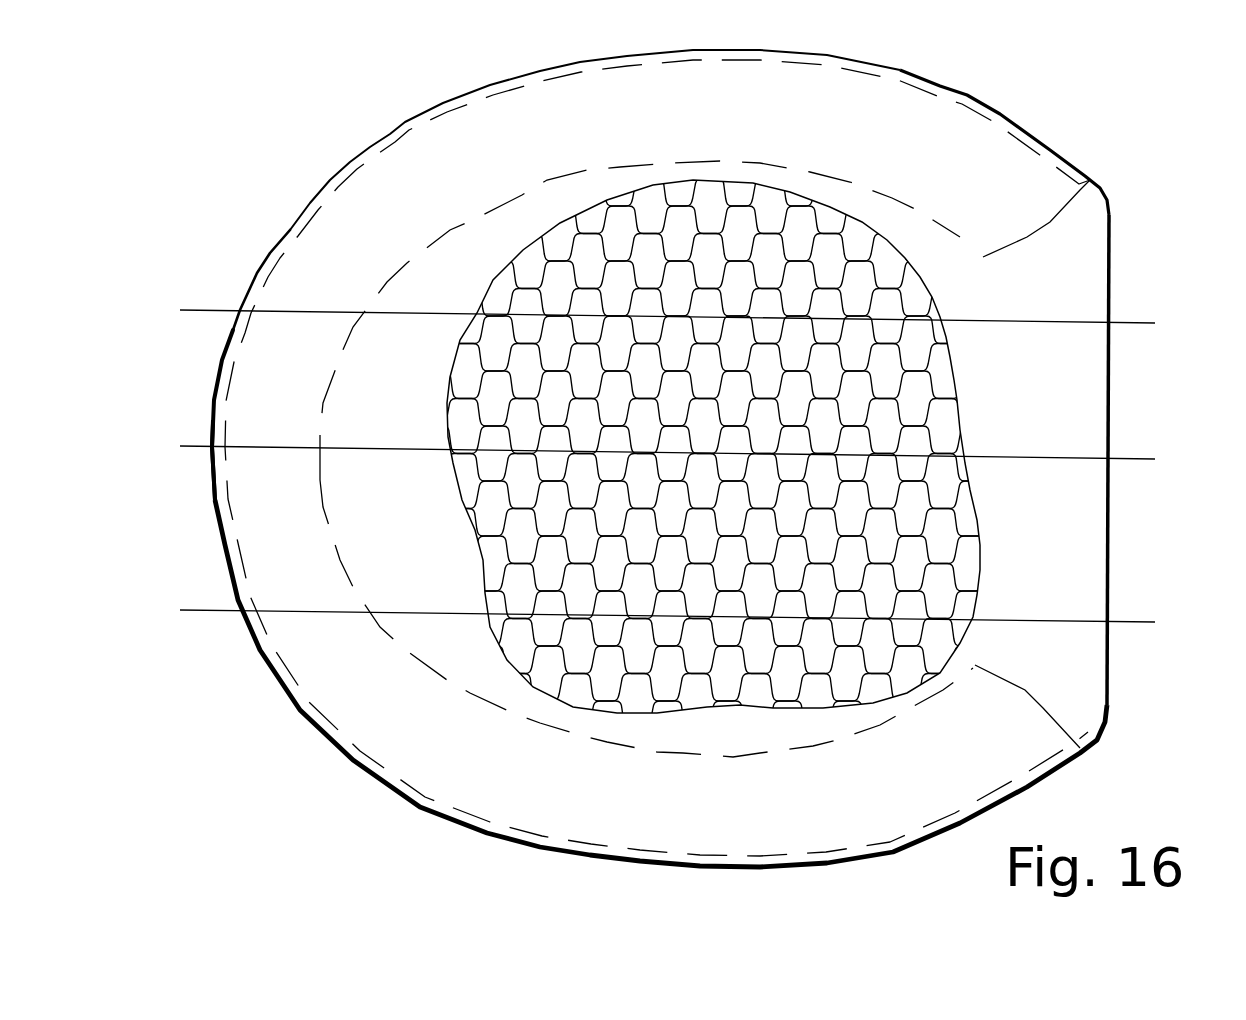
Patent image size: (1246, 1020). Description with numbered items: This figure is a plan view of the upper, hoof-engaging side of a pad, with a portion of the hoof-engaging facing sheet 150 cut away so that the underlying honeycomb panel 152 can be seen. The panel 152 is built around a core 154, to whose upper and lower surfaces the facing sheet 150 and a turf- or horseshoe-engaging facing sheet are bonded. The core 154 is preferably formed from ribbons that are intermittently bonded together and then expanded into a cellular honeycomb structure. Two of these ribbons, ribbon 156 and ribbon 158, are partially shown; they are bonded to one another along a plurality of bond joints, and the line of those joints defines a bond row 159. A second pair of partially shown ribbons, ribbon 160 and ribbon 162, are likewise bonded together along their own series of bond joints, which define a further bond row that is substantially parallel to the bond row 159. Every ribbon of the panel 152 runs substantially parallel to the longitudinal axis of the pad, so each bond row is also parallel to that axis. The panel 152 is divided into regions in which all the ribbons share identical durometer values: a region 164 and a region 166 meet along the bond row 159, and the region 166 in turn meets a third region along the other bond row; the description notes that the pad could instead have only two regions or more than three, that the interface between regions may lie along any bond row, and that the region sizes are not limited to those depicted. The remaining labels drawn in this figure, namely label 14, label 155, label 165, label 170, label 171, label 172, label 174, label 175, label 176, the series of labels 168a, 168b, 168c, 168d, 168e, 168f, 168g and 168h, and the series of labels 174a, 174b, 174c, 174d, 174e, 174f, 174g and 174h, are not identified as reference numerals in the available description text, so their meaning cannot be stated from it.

The insole 14 is at (976, 90).
The hoof-engaging facing sheet 150 is at (1113, 196).
The honeycomb panel 152 is at (742, 162).
The core 154 is at (212, 452).
The medial transverse line 155 is at (197, 447).
The ribbon 156 is at (1110, 523).
The ribbon 158 is at (467, 379).
The bond row 159 is at (575, 692).
The ribbon 160 is at (560, 198).
The ribbon 162 is at (960, 520).
The region 164 is at (930, 305).
The upper transverse line 165 is at (205, 310).
The region 166 is at (933, 343).
The cell column 168a is at (498, 313).
The cell column 168b is at (555, 311).
The cell column 168c is at (617, 311).
The cell column 168d is at (677, 311).
The cell column 168e is at (740, 311).
The cell column 168f is at (800, 311).
The cell column 168g is at (858, 311).
The cell column 168h is at (920, 312).
The matrix region 170 is at (975, 607).
The lower transverse line 171 is at (205, 610).
The matrix region 172 is at (955, 635).
The lateral region 174 is at (1087, 298).
The cell column 174a is at (523, 618).
The cell column 174b is at (580, 618).
The cell column 174c is at (642, 618).
The cell column 174d is at (703, 618).
The cell column 174e is at (763, 618).
The cell column 174f is at (823, 618).
The cell column 174g is at (880, 618).
The cell column 174h is at (940, 618).
The lateral region 175 is at (1088, 424).
The lateral region 176 is at (1090, 656).